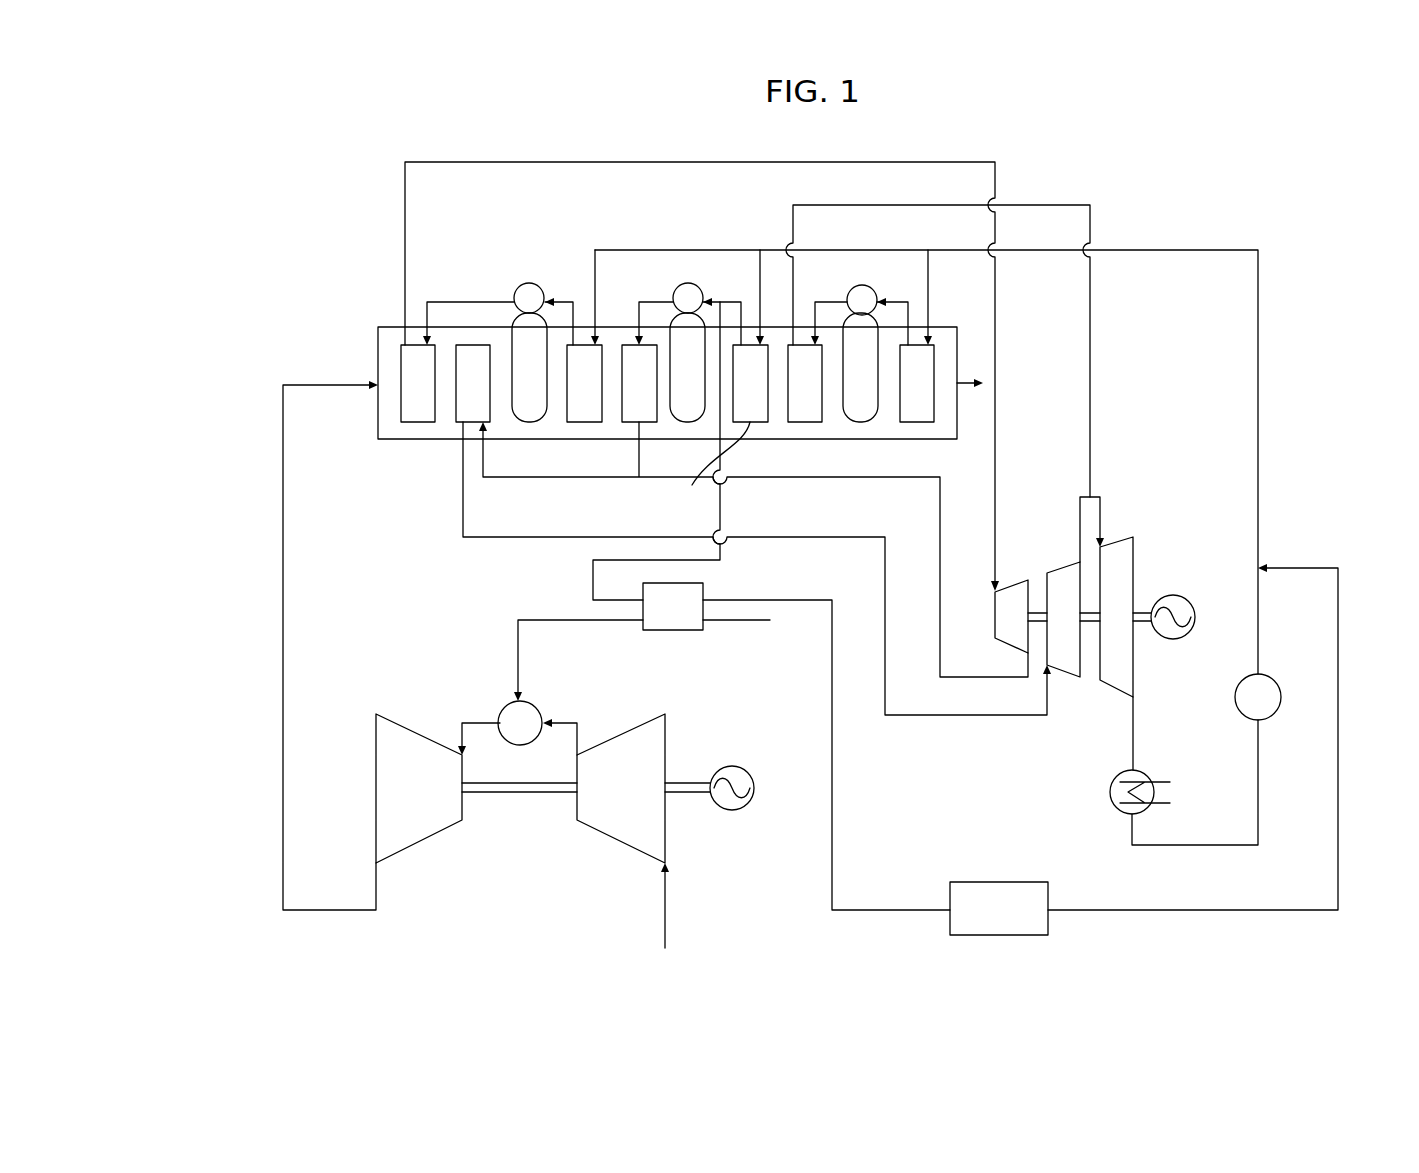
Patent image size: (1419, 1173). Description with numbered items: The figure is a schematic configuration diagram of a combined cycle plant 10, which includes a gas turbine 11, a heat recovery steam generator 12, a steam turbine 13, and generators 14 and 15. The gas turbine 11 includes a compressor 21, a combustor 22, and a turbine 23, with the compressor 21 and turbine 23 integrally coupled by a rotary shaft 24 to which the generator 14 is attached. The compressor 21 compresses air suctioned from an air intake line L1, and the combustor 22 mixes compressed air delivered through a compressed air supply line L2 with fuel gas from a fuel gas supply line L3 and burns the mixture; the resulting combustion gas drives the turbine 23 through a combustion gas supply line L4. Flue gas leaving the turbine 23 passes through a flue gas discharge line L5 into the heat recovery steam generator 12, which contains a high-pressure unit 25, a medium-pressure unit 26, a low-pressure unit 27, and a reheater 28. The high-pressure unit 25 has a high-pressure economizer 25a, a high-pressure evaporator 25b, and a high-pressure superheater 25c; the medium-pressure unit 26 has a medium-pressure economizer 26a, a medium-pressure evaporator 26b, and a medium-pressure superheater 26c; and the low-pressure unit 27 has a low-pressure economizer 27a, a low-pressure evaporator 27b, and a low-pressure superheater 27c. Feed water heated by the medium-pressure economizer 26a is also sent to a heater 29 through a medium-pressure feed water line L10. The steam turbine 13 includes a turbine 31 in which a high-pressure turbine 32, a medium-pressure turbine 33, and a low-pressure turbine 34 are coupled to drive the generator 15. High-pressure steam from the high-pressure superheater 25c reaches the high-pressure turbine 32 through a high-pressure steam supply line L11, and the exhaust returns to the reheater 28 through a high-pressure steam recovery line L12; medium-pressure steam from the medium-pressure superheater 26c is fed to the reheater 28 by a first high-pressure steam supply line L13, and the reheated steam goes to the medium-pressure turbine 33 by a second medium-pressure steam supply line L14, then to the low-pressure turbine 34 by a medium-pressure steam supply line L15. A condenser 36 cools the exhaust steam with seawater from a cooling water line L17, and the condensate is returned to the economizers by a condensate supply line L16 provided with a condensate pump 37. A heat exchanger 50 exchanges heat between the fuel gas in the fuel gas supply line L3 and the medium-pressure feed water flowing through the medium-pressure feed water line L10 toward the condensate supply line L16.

The combined cycle plant 10 is at (280, 203).
The gas turbine 11 is at (436, 684).
The heat recovery steam generator 12 is at (372, 305).
The steam turbine 13 is at (1068, 642).
The generator 14 is at (732, 766).
The generator 15 is at (1170, 595).
The compressor 21 is at (620, 733).
The combustor 22 is at (543, 701).
The turbine 23 is at (376, 790).
The rotary shaft 24 is at (520, 795).
The high-pressure unit 25 is at (448, 471).
The high-pressure economizer 25a is at (522, 423).
The high-pressure evaporator 25b is at (458, 425).
The high-pressure superheater 25c is at (418, 422).
The medium-pressure unit 26 is at (643, 445).
The medium-pressure economizer 26a is at (681, 401).
The medium-pressure evaporator 26b is at (630, 422).
The medium-pressure superheater 26c is at (577, 422).
The low-pressure unit 27 is at (813, 439).
The low-pressure economizer 27a is at (913, 422).
The low-pressure evaporator 27b is at (863, 422).
The low-pressure superheater 27c is at (807, 422).
The reheater 28 is at (478, 340).
The heater 29 is at (707, 588).
The turbine 31 is at (1049, 686).
The high-pressure turbine 32 is at (1013, 650).
The medium-pressure turbine 33 is at (1062, 670).
The low-pressure turbine 34 is at (1113, 692).
The condenser 36 is at (1140, 770).
The condensate pump 37 is at (1235, 697).
The heat exchanger 50 is at (997, 935).
The air intake line L1 is at (668, 935).
The compressed air supply line L2 is at (563, 717).
The fuel gas supply line L3 is at (518, 620).
The combustion gas supply line L4 is at (475, 721).
The flue gas discharge line L5 is at (283, 648).
The medium-pressure feed water line L10 is at (828, 908).
The high-pressure steam supply line L11 is at (998, 342).
The high-pressure steam recovery line L12 is at (942, 525).
The first high-pressure steam supply line L13 is at (553, 478).
The second medium-pressure steam supply line L14 is at (882, 716).
The medium-pressure steam supply line L15 is at (1078, 513).
The condensate supply line L16 is at (1261, 345).
The cooling water line L17 is at (1172, 810).